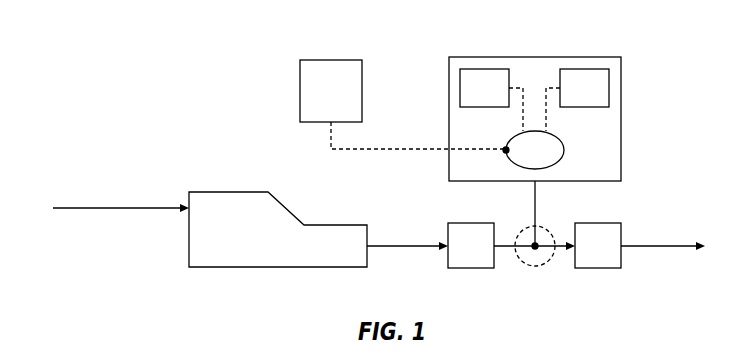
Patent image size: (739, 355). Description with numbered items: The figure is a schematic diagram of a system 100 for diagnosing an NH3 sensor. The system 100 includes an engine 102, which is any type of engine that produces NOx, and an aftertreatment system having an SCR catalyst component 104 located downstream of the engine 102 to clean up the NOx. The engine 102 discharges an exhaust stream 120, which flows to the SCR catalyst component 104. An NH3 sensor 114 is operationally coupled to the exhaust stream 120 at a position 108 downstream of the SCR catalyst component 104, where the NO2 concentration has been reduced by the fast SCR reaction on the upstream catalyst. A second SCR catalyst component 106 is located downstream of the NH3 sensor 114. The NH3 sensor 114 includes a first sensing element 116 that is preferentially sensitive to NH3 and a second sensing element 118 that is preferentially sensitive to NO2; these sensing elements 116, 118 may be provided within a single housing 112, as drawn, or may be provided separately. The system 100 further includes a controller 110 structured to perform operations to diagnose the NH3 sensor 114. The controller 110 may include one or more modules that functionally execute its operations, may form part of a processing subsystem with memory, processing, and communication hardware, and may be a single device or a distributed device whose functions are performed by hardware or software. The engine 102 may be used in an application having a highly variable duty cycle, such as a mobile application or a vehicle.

The system 100 is at (176, 85).
The engine 102 is at (278, 229).
The SCR catalyst component 104 is at (471, 245).
The second SCR catalyst component 106 is at (640, 245).
The position 108 is at (541, 266).
The controller 110 is at (401, 104).
The housing 112 is at (621, 119).
The NH3 sensor 114 is at (564, 150).
The first sensing element 116 is at (484, 69).
The second sensing element 118 is at (585, 69).
The exhaust stream 120 is at (407, 248).